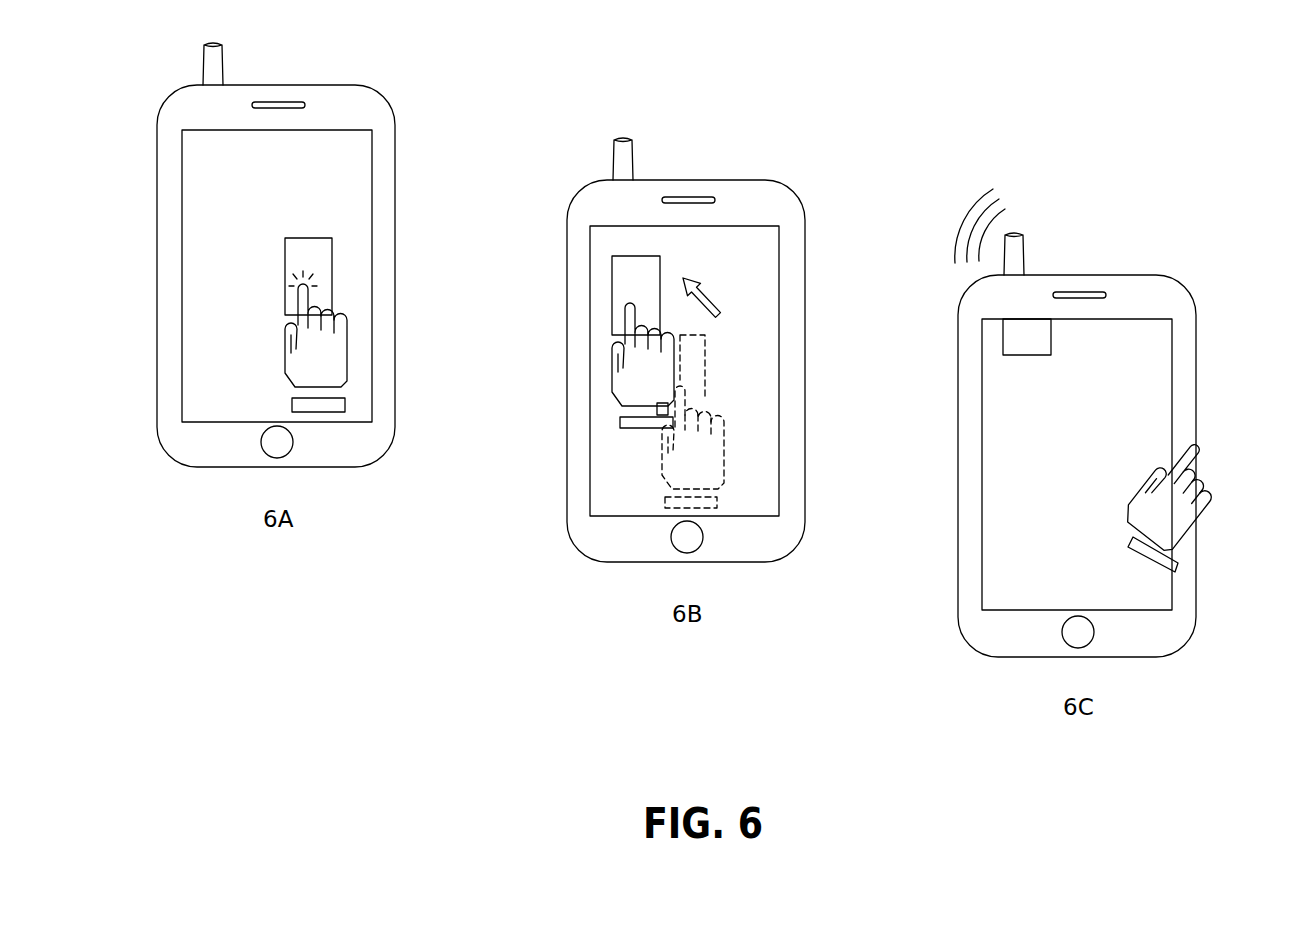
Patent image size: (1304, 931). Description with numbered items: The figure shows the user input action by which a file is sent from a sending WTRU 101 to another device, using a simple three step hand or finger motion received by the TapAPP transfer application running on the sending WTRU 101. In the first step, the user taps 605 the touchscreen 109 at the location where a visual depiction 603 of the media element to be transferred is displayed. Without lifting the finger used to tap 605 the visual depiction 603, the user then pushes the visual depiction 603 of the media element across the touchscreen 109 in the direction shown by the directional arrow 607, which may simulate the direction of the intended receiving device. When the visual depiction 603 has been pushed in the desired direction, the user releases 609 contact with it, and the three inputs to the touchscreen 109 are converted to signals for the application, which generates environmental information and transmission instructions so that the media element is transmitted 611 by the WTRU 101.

The sending WTRU 101 is at (395, 275).
The touchscreen/display 109 is at (372, 172).
The visual depiction of a media element 603 is at (305, 238).
The tap 605 is at (318, 412).
The directional arrow 607 is at (690, 278).
The release 609 is at (1207, 522).
The transmission of the media element 611 is at (992, 190).